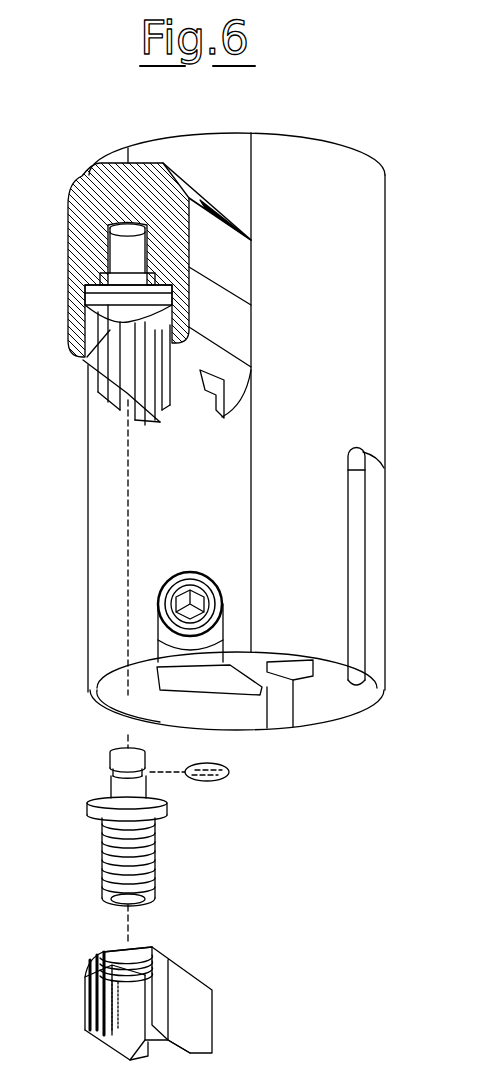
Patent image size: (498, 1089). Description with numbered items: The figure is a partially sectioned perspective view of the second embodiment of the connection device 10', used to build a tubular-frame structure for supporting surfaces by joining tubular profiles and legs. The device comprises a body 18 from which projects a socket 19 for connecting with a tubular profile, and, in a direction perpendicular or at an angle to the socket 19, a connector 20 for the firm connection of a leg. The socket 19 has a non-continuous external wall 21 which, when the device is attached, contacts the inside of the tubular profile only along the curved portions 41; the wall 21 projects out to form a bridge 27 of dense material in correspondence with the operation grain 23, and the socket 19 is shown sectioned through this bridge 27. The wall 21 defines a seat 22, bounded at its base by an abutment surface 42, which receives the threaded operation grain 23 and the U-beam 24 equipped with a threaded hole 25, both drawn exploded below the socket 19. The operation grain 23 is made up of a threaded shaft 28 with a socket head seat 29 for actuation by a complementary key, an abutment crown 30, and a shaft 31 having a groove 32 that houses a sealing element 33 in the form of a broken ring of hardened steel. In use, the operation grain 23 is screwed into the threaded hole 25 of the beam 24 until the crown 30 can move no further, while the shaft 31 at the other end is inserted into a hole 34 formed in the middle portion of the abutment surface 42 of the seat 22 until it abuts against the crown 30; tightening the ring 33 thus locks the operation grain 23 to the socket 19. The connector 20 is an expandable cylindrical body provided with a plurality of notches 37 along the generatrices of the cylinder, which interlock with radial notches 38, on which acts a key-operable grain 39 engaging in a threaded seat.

The connection device 10' is at (350, 77).
The body 18 is at (362, 170).
The socket 19 is at (78, 184).
The connector 20 is at (318, 540).
The external wall 21 is at (252, 273).
The seat 22 is at (95, 367).
The operation grain 23 is at (130, 833).
The U-beam 24 is at (159, 989).
The threaded hole 25 is at (122, 952).
The bridge 27 is at (130, 185).
The threaded shaft 28 is at (105, 862).
The socket head seat 29 is at (133, 907).
The abutment crown 30 is at (92, 808).
The shaft 31 is at (112, 760).
The groove 32 is at (112, 772).
The sealing element 33 is at (220, 782).
The hole 34 is at (115, 245).
The notches 37 is at (352, 616).
The radial notches 38 is at (278, 660).
The grain 39 is at (188, 575).
The curved portions 41 is at (218, 212).
The abutment surface 42 is at (118, 318).